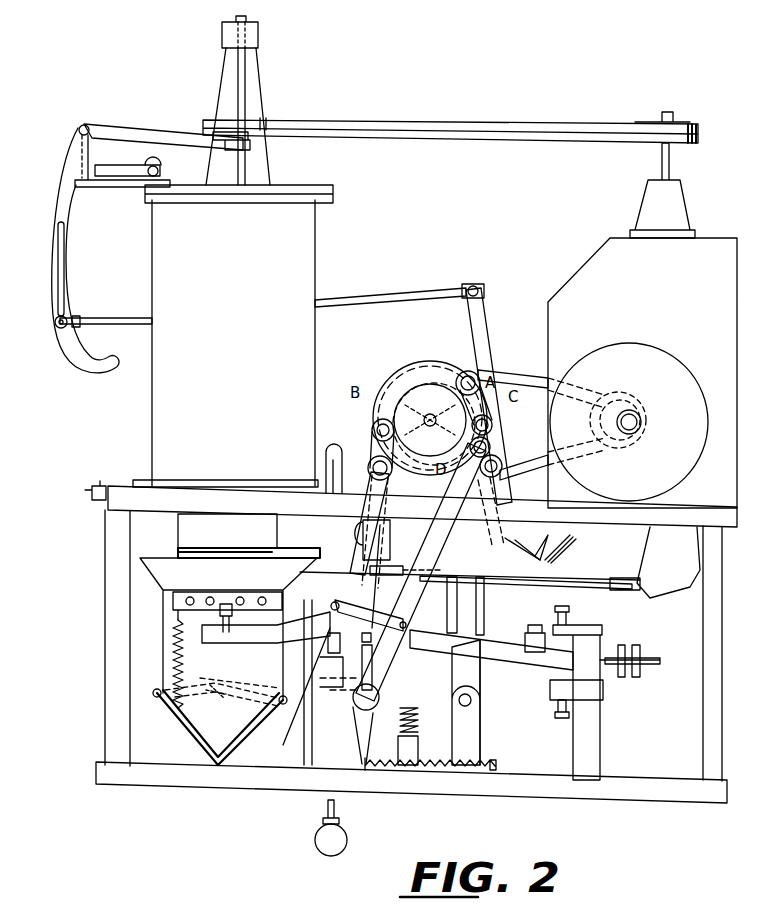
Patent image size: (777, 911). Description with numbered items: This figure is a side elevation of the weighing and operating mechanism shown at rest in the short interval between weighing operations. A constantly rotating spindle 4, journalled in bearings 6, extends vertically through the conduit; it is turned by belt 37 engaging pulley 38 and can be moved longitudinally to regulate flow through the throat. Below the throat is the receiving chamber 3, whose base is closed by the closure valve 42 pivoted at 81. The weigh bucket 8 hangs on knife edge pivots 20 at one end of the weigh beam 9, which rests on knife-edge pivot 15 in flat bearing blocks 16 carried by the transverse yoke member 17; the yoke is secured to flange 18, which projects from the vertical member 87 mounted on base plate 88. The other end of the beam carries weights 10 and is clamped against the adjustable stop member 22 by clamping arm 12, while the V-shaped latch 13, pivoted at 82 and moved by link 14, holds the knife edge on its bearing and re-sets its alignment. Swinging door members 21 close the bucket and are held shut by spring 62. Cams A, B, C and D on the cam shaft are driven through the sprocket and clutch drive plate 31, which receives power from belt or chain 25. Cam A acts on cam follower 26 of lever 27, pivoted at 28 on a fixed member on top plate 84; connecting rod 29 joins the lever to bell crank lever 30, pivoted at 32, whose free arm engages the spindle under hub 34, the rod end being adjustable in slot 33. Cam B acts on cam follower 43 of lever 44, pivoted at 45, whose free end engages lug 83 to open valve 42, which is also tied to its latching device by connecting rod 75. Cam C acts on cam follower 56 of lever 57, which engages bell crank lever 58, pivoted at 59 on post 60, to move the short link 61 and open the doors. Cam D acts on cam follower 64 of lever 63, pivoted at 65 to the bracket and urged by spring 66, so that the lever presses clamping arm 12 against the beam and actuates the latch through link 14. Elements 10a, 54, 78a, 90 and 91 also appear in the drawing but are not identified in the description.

The receiving chamber 3 is at (178, 535).
The spindle 4 is at (243, 172).
The bearings 6 is at (262, 36).
The weigh bucket 8 is at (163, 580).
The weigh beam 9 is at (272, 643).
The weights 10 is at (532, 632).
The adjusting wheel 10a is at (640, 650).
The clamping arm 12 is at (480, 641).
The V-shaped latch 13 is at (372, 612).
The link 14 is at (366, 607).
The knife-edge pivot 15 is at (372, 640).
The flat bearing blocks 16 is at (343, 647).
The transverse yoke member 17 is at (362, 658).
The flange 18 is at (340, 673).
The knife edge pivots 20 is at (230, 630).
The swinging door members 21 is at (180, 742).
The adjustable stop member 22 is at (560, 720).
The belt or chain 25 is at (520, 372).
The cam follower 26 is at (462, 378).
The lever 27 is at (480, 322).
The pivot point 28 is at (503, 472).
The connecting rod 29 is at (375, 300).
The bell crank lever 30 is at (63, 258).
The cam wheel 31 is at (435, 365).
The pivot 32 is at (82, 124).
The slot 33 is at (65, 362).
The hub 34 is at (197, 133).
The belt 37 is at (443, 130).
The pulley 38 is at (268, 120).
The closure valve 42 is at (212, 556).
The cam follower 43 is at (372, 425).
The lever 44 is at (378, 490).
The pivot point 45 is at (372, 460).
The post 54 is at (457, 604).
The cam follower 56 is at (492, 425).
The lever 57 is at (522, 547).
The bell crank lever 58 is at (480, 673).
The pivot 59 is at (471, 700).
The post 60 is at (480, 745).
The short link 61 is at (216, 706).
The spring 62 is at (173, 657).
The lever 63 is at (400, 668).
The cam follower 64 is at (490, 447).
The pivot 65 is at (356, 704).
The spring 66 is at (432, 768).
The connecting rod 75 is at (578, 582).
The knob 78a is at (92, 484).
The pivot 81 is at (370, 572).
The pivot 82 is at (295, 740).
The lug 83 is at (390, 548).
The top plate 84 is at (118, 500).
The vertical member 87 is at (304, 772).
The base plate 88 is at (193, 782).
The spring 90 is at (418, 733).
The stop pin 91 is at (212, 685).